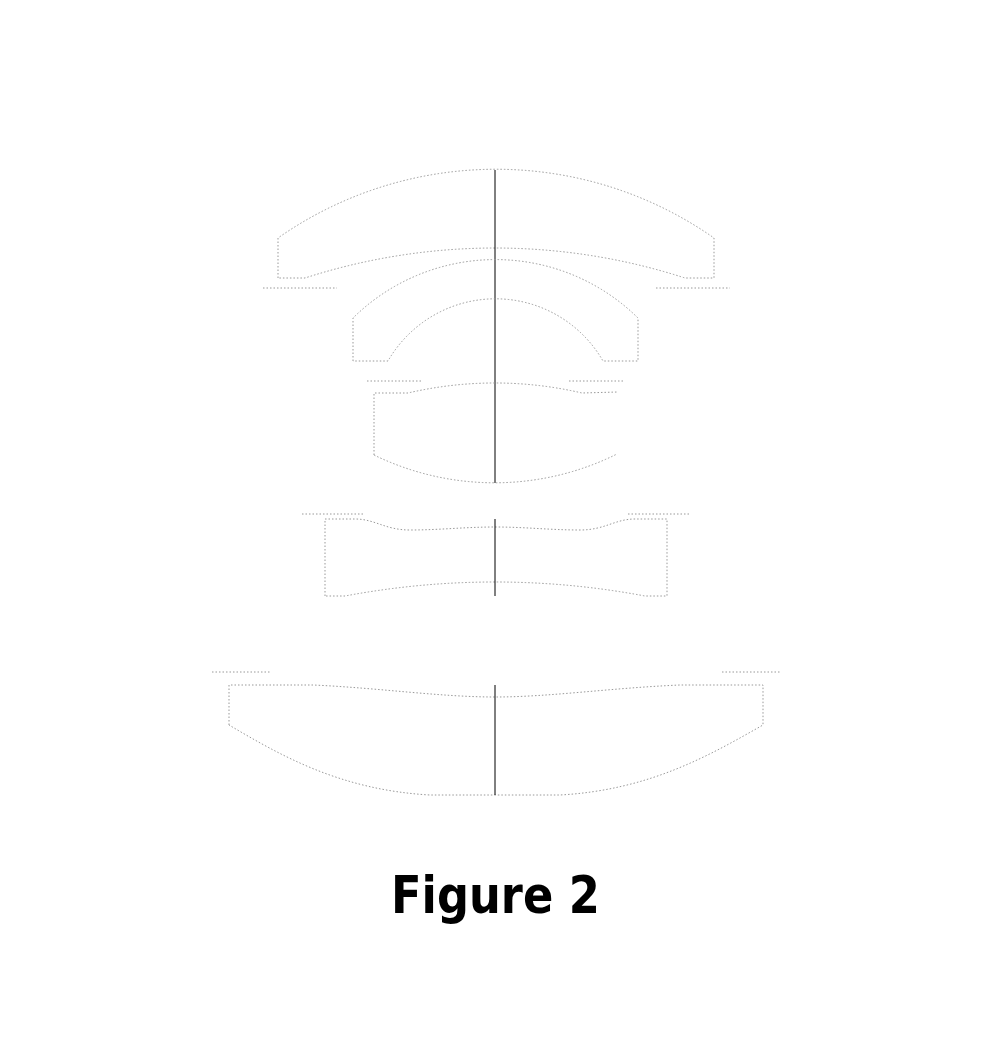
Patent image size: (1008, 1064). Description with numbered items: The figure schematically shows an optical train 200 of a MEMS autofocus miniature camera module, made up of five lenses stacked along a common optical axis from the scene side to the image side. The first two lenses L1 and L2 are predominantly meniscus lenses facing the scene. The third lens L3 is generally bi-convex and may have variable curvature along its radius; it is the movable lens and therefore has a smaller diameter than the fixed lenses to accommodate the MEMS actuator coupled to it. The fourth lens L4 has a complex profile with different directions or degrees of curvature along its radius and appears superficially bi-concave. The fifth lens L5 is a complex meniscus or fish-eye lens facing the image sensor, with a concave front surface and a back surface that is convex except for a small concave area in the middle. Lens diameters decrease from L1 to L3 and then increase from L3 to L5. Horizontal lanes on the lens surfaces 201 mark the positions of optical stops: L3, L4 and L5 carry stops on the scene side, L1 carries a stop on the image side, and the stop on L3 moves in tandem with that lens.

The lens assembly 200 is at (157, 92).
The lens surfaces 201 is at (762, 664).
The lens L1 is at (448, 326).
The lens L2 is at (450, 313).
The lens L3 is at (459, 433).
The lens L4 is at (458, 557).
The lens L5 is at (452, 740).